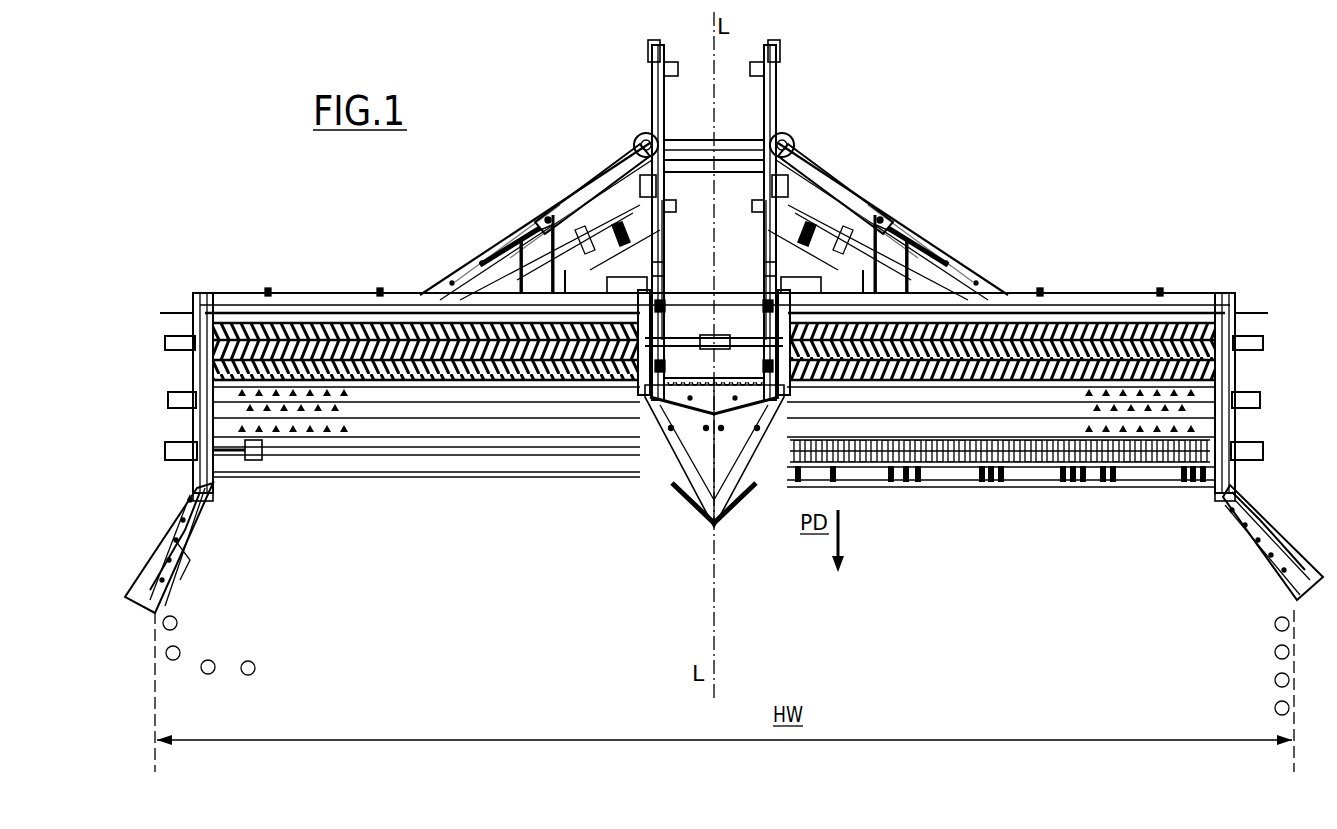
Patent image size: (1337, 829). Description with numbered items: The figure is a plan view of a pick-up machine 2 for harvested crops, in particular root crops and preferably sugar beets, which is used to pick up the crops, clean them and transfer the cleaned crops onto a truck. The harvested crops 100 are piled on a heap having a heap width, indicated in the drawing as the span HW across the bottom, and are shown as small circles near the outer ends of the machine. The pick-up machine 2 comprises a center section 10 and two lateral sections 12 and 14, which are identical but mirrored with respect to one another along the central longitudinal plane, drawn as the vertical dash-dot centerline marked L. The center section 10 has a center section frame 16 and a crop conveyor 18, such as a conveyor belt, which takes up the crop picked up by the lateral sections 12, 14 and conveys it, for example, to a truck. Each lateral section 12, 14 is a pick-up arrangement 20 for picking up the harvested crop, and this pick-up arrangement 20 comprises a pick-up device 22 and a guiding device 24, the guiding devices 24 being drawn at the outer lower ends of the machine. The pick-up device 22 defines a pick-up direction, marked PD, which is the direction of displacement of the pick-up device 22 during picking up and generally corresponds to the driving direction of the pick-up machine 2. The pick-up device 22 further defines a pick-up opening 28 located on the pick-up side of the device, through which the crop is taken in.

The pick-up machine 2 is at (846, 40).
The center section 10 is at (737, 283).
The lateral section 12 is at (1115, 266).
The lateral section 14 is at (355, 272).
The center section frame 16 is at (664, 275).
The crop conveyor 18 is at (738, 202).
The pick-up arrangement 20 is at (155, 302).
The pick-up device 22 is at (506, 522).
The guiding device 24 is at (137, 520).
The pick-up opening 28 is at (377, 520).
The harvested crops 100 is at (180, 653).